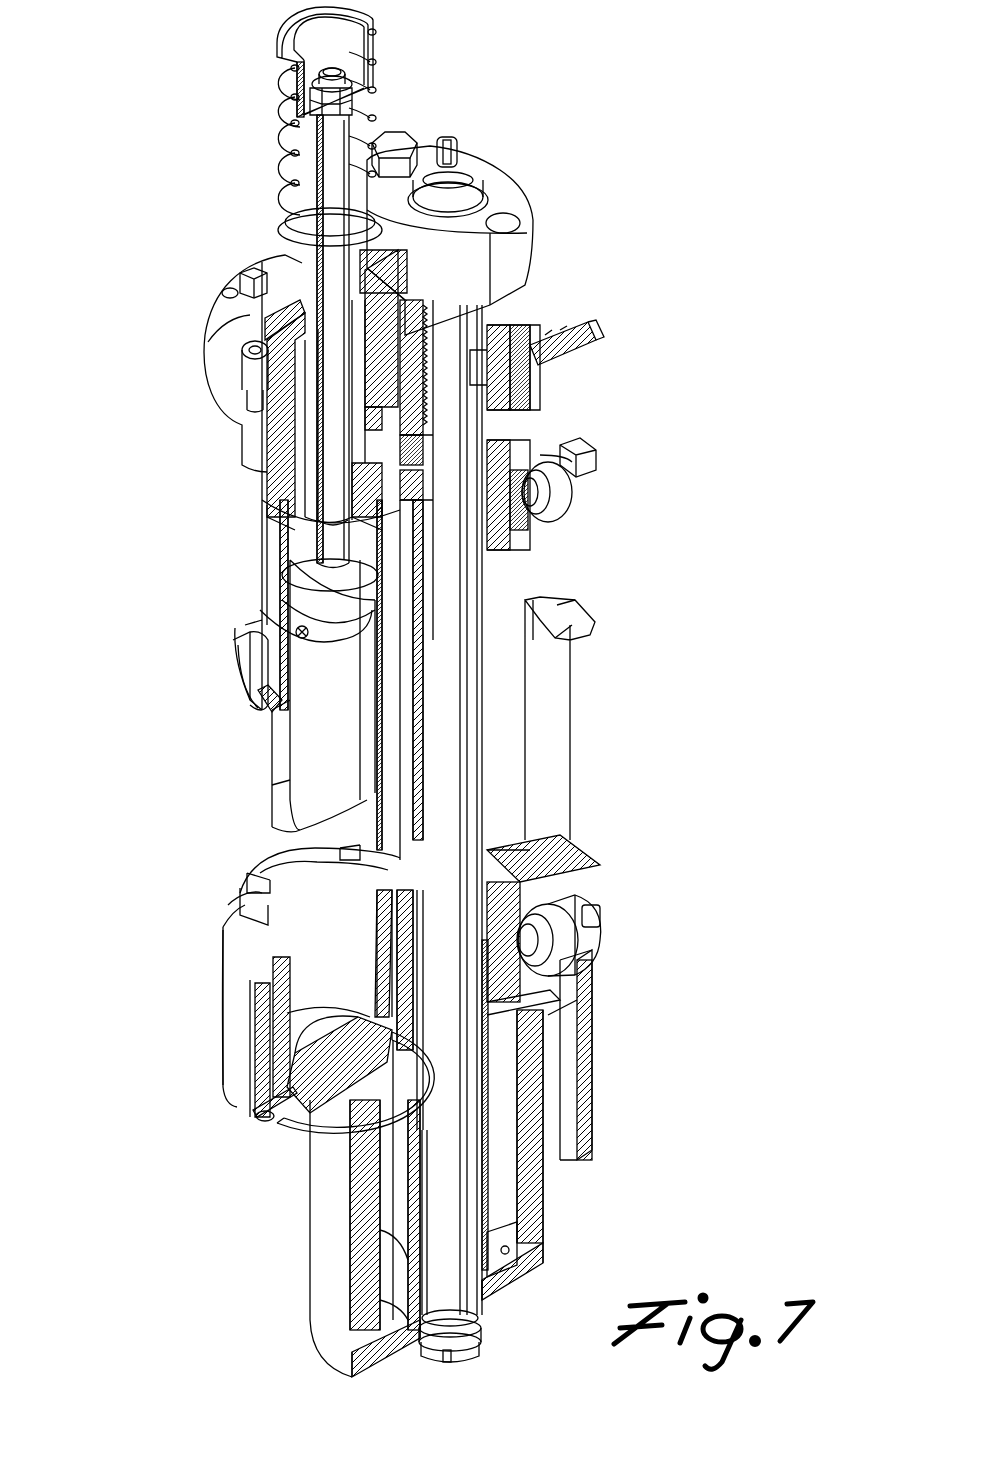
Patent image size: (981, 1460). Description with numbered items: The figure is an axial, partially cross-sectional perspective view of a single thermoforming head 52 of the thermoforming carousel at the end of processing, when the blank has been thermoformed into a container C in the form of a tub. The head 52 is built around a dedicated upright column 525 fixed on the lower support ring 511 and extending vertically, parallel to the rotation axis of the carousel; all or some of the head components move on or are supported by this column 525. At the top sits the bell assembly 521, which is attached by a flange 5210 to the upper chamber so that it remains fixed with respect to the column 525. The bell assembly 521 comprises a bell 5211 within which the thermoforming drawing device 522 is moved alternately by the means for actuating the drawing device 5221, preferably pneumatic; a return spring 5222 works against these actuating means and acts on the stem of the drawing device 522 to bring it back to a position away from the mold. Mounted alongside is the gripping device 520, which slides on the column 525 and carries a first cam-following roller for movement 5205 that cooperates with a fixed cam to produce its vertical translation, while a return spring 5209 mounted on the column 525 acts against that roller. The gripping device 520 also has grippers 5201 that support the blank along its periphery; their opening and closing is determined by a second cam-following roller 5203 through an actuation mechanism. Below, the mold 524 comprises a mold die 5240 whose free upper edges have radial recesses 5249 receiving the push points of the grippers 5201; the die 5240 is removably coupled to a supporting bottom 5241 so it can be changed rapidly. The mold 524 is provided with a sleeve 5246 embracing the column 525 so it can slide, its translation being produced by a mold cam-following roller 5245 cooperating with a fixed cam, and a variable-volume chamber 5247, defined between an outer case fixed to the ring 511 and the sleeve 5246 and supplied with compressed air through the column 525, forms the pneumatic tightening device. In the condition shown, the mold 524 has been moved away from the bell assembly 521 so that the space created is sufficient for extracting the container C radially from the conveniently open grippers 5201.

The thermoforming head 52 is at (620, 226).
The lower support ring 511 is at (350, 1366).
The gripping device 520 is at (582, 388).
The bell assembly 521 is at (256, 517).
The thermoforming drawing device 522 is at (350, 663).
The mold 524 is at (210, 1017).
The upright column 525 is at (437, 713).
The grippers 5201 is at (242, 635).
The second cam-following roller for actuating grippers 5203 is at (522, 337).
The first cam-following roller for movement 5205 is at (552, 512).
The return spring 5209 is at (417, 352).
The flange 5210 is at (258, 312).
The bell 5211 is at (272, 573).
The means for actuating the drawing device 5221 is at (258, 420).
The return spring 5222 is at (292, 168).
The mold die 5240 is at (322, 915).
The supporting bottom 5241 is at (322, 1075).
The mold cam-following roller 5245 is at (580, 937).
The sleeve 5246 is at (405, 1195).
The variable-volume chamber 5247 is at (500, 1177).
The radial recesses 5249 is at (352, 838).
The container C is at (283, 780).